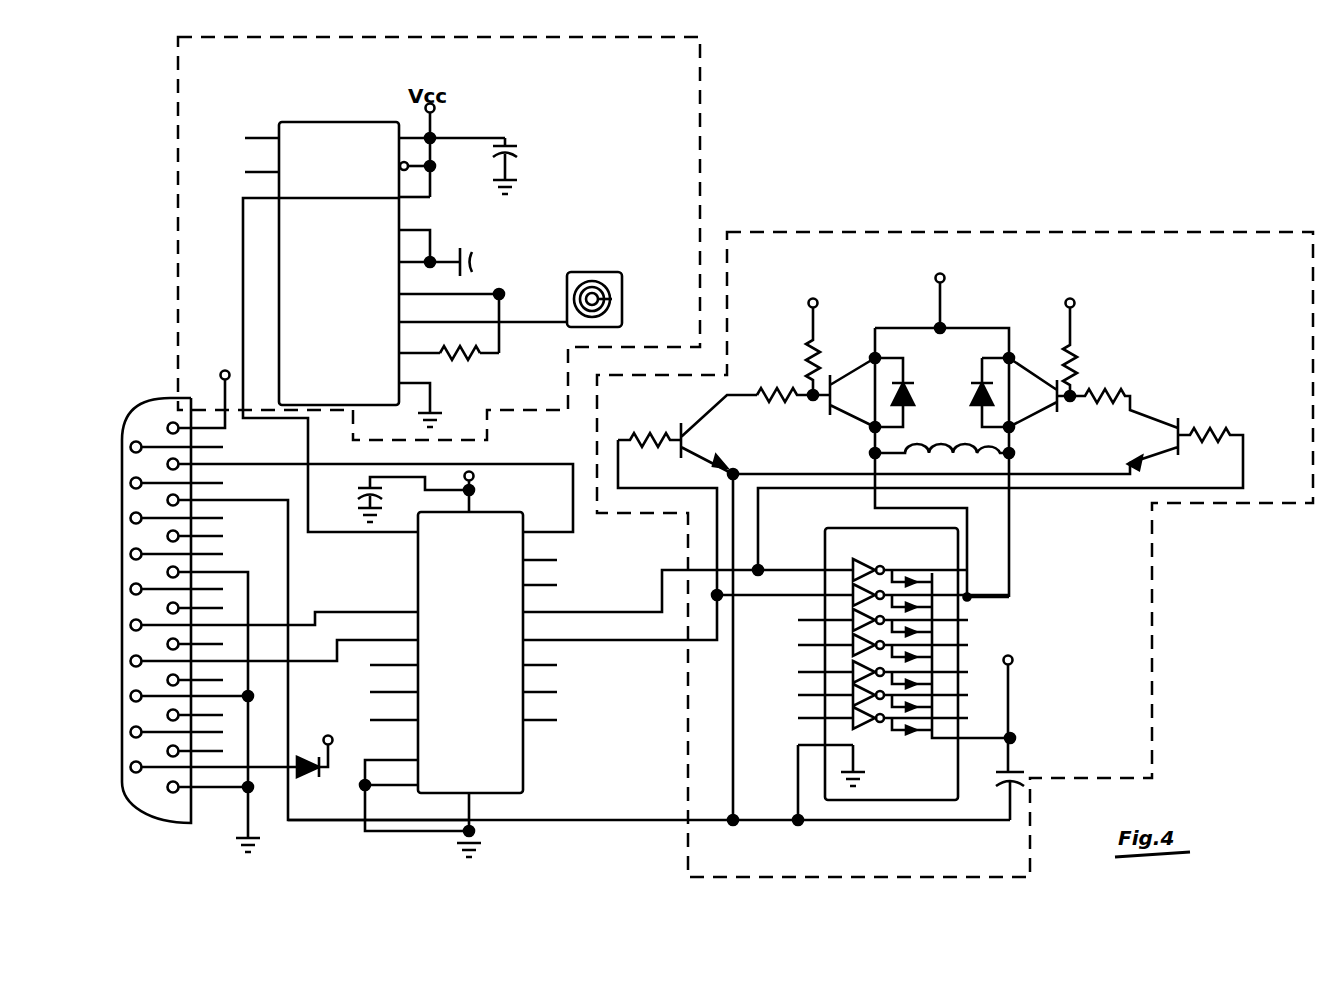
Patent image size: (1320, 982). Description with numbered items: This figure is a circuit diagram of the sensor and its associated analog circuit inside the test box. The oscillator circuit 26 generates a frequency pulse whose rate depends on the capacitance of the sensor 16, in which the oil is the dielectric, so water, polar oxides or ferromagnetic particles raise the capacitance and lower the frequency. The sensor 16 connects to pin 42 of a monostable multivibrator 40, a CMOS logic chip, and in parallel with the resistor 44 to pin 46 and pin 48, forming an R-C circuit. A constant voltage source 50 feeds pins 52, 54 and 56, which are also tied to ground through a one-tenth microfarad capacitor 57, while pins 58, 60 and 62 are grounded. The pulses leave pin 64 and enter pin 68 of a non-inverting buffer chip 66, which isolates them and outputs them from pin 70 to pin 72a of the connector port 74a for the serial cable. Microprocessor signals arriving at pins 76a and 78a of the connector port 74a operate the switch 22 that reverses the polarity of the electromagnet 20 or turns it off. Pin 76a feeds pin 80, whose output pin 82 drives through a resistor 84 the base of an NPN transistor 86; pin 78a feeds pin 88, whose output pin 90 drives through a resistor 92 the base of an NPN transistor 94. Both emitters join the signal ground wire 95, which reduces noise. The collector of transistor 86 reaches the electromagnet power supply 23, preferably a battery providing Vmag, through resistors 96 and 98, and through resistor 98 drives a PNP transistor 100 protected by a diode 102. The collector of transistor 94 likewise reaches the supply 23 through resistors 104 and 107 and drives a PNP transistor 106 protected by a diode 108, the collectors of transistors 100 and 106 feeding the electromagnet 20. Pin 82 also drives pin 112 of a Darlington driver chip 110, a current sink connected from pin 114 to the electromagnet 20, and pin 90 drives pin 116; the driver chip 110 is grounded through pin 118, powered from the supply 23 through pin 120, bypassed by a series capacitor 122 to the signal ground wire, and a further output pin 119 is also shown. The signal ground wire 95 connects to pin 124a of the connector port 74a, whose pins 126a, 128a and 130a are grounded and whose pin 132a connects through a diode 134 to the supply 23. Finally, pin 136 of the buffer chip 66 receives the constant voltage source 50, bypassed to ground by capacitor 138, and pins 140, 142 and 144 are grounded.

The sensor 16 is at (600, 272).
The electromagnet 20 is at (1010, 450).
The switch 22 is at (893, 232).
The electromagnet power supply 23 is at (333, 741).
The oscillator circuit 26 is at (700, 160).
The monostable multivibrator 40 is at (325, 122).
The pin 42 is at (460, 322).
The resistor 44 is at (470, 358).
The pin 46 is at (417, 350).
The pin 48 is at (458, 292).
The constant voltage source 50 is at (435, 108).
The pin 52 is at (433, 140).
The pin 54 is at (432, 168).
The pin 56 is at (432, 198).
The capacitor 57 is at (517, 150).
The pin 58 is at (412, 230).
The pin 60 is at (432, 398).
The pin 62 is at (418, 255).
The pin 64 is at (243, 268).
The non-inverting buffer chip 66 is at (507, 748).
The pin 68 is at (372, 533).
The pin 70 is at (573, 533).
The pin 72a is at (218, 466).
The connector port 74a is at (125, 466).
The pin 76a is at (133, 623).
The pin 78a is at (133, 661).
The pin 80 is at (358, 612).
The pin 82 is at (570, 608).
The resistor 84 is at (1207, 430).
The NPN transistor 86 is at (1162, 398).
The pin 88 is at (360, 640).
The pin 90 is at (580, 641).
The resistor 92 is at (648, 437).
The NPN transistor 94 is at (678, 430).
The signal ground wire 95 is at (735, 682).
The resistor 96 is at (1080, 372).
The resistor 98 is at (1100, 405).
The PNP transistor 100 is at (1052, 387).
The diode 102 is at (972, 385).
The resistor 104 is at (803, 338).
The PNP transistor 106 is at (830, 398).
The resistor 107 is at (782, 388).
The diode 108 is at (913, 393).
The Darlington driver chip 110 is at (885, 820).
The pin 112 is at (781, 570).
The pin 114 is at (947, 568).
The pin 116 is at (780, 597).
The pin 118 is at (805, 742).
The driver output line 119 is at (983, 598).
The pin 120 is at (983, 738).
The capacitor 122 is at (1013, 778).
The pin 124a is at (245, 503).
The pin 126a is at (229, 573).
The pin 128a is at (227, 696).
The pin 130a is at (203, 788).
The pin 132a is at (124, 782).
The diode 134 is at (305, 777).
The pin 136 is at (472, 492).
The capacitor 138 is at (357, 489).
The pin 140 is at (376, 765).
The pin 142 is at (385, 765).
The pin 144 is at (462, 805).